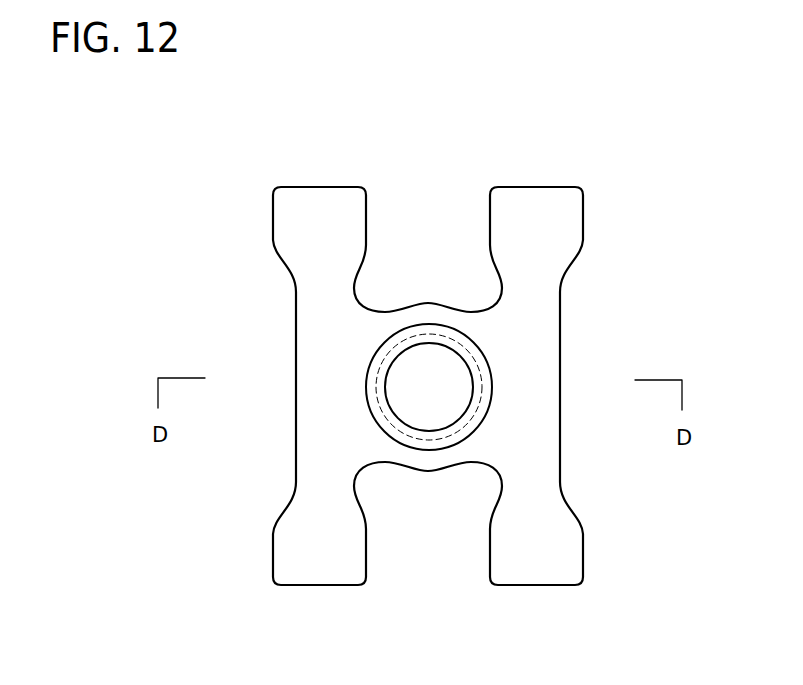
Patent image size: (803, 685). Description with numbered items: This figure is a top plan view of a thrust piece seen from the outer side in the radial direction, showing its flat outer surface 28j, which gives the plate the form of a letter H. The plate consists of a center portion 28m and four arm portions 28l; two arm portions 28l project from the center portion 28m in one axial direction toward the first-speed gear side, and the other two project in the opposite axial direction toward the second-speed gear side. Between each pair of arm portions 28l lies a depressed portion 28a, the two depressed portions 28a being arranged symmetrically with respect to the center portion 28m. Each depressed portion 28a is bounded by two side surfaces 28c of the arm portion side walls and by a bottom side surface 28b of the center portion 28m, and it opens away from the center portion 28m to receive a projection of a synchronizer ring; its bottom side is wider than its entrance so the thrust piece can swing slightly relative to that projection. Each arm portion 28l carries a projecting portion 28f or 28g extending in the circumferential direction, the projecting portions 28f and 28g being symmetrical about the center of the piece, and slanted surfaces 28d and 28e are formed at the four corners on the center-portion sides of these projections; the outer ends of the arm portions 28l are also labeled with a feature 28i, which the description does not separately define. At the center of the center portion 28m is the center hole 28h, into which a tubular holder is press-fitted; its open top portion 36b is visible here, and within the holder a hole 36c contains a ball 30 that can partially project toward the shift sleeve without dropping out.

The depressed portion 28a is at (449, 222).
The bottom side surface 28b is at (428, 305).
The side surface 28c is at (367, 206).
The slanted surface 28d is at (278, 258).
The slanted surface 28e is at (575, 258).
The projecting portion 28f is at (282, 217).
The projecting portion 28g is at (570, 208).
The center hole 28h is at (467, 420).
The end face 28i is at (315, 558).
The outer surface 28j is at (317, 222).
The arm portion 28l is at (300, 235).
The center portion 28m is at (527, 385).
The ball 30 is at (440, 383).
The top portion 36b is at (372, 398).
The hole 36c is at (472, 402).